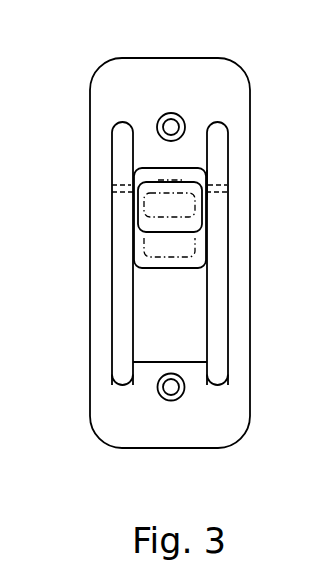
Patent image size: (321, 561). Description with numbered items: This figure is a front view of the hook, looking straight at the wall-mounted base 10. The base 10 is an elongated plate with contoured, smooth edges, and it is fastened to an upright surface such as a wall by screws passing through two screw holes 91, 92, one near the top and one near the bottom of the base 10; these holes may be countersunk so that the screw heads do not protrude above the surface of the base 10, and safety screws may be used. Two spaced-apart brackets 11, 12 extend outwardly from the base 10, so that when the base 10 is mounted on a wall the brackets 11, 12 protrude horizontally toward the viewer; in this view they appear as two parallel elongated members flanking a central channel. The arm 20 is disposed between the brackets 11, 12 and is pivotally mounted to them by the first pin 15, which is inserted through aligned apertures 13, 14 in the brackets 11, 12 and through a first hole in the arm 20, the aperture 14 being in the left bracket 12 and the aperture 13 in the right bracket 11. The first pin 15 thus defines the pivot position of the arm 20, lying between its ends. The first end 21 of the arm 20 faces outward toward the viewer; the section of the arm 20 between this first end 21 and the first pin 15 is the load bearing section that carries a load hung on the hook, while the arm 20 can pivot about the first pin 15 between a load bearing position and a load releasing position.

The base 10 is at (172, 77).
The bracket 11 is at (222, 338).
The bracket 12 is at (115, 343).
The aperture 13 is at (228, 192).
The aperture 14 is at (112, 192).
The first pin 15 is at (218, 192).
The arm 20 is at (180, 248).
The first end 21 is at (173, 207).
The screw hole 91 is at (169, 129).
The screw hole 92 is at (173, 388).